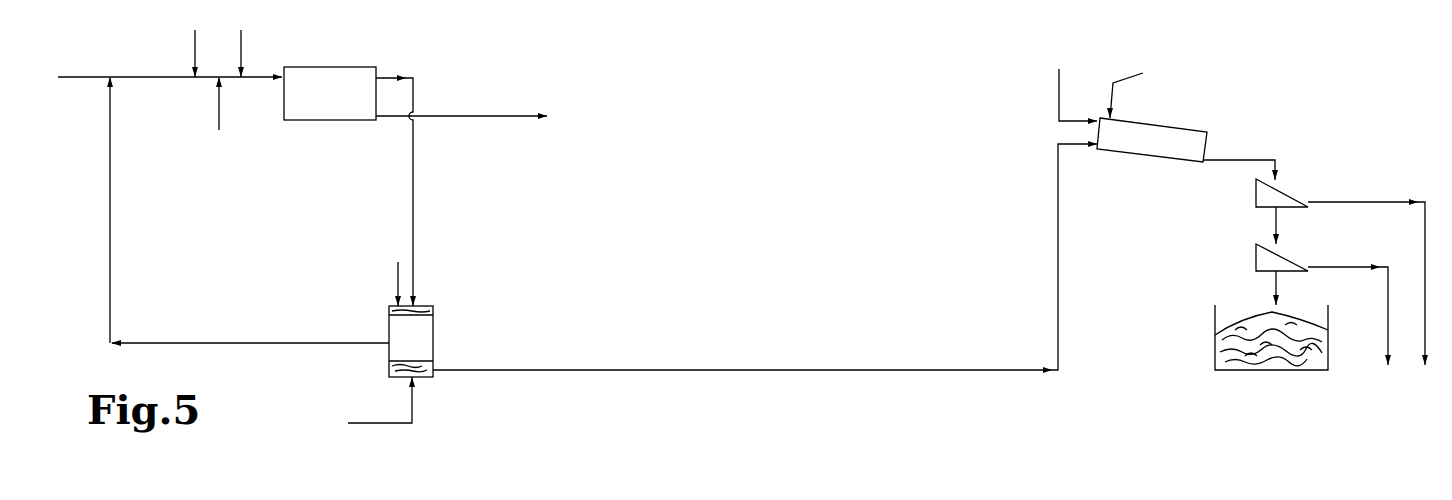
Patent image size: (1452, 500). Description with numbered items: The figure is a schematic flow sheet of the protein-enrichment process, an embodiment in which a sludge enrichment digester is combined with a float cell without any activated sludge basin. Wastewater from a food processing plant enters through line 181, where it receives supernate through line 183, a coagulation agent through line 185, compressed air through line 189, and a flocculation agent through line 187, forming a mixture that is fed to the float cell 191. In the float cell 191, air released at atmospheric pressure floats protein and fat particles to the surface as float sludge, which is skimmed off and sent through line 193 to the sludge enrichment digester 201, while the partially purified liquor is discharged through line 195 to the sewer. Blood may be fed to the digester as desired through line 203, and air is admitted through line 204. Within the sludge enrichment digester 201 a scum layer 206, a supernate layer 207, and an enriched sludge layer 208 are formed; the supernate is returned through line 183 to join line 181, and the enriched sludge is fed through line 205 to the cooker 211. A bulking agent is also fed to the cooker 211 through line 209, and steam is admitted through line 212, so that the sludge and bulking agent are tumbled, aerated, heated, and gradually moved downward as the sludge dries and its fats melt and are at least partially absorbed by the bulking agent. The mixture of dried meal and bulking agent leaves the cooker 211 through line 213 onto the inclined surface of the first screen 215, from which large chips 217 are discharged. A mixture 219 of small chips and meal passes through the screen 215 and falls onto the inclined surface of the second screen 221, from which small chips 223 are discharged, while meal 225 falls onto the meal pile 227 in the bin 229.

The line 181 is at (78, 77).
The line 183 is at (111, 139).
The line 185 is at (193, 56).
The line 187 is at (243, 56).
The line 189 is at (219, 116).
The float cell 191 is at (320, 67).
The line 193 is at (416, 92).
The line 195 is at (487, 115).
The sludge enrichment digester 201 is at (388, 328).
The line 203 is at (395, 278).
The line 204 is at (383, 423).
The line 205 is at (628, 370).
The scum layer 206 is at (434, 308).
The supernate layer 207 is at (436, 345).
The enriched sludge layer 208 is at (423, 374).
The line 209 is at (1057, 90).
The cooker 211 is at (1152, 123).
The line 212 is at (1128, 78).
The line 213 is at (1245, 160).
The No. 1 screen 215 is at (1278, 193).
The large chips 217 is at (1402, 202).
The mixture 219 is at (1276, 228).
The No. 2 screen 221 is at (1280, 263).
The small chips 223 is at (1382, 267).
The meal 225 is at (1278, 284).
The meal pile 227 is at (1250, 318).
The bin 229 is at (1215, 321).